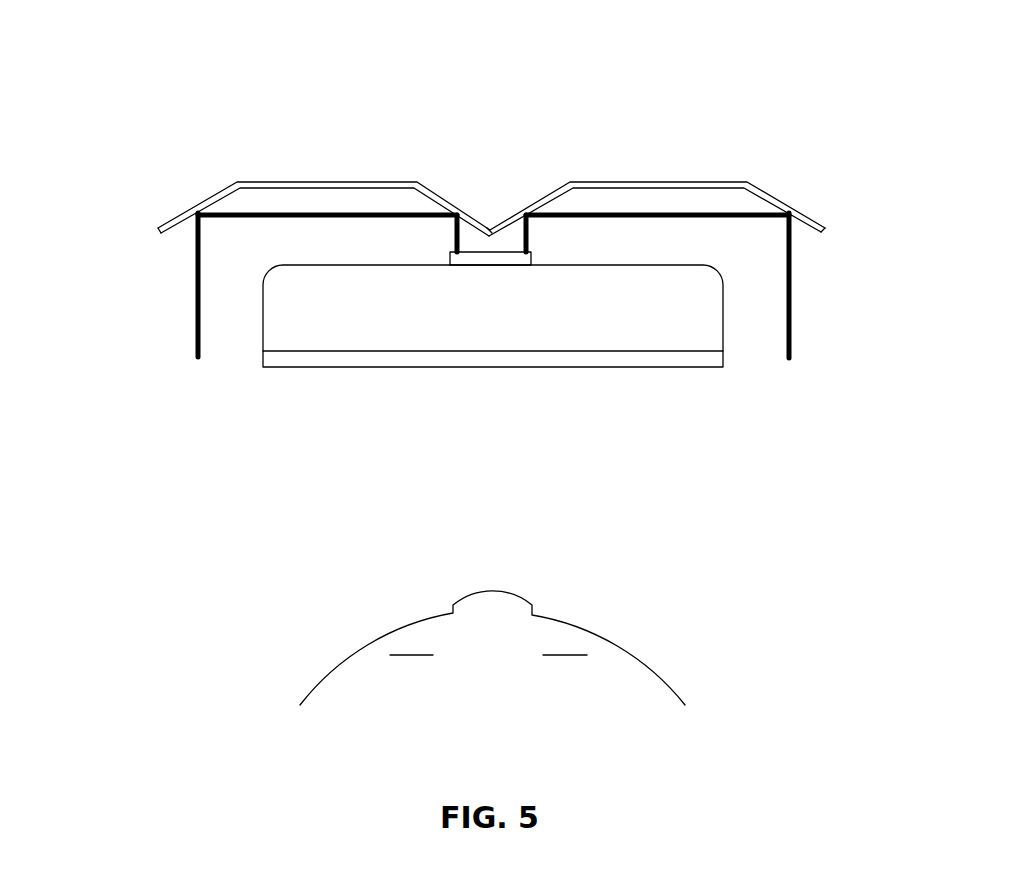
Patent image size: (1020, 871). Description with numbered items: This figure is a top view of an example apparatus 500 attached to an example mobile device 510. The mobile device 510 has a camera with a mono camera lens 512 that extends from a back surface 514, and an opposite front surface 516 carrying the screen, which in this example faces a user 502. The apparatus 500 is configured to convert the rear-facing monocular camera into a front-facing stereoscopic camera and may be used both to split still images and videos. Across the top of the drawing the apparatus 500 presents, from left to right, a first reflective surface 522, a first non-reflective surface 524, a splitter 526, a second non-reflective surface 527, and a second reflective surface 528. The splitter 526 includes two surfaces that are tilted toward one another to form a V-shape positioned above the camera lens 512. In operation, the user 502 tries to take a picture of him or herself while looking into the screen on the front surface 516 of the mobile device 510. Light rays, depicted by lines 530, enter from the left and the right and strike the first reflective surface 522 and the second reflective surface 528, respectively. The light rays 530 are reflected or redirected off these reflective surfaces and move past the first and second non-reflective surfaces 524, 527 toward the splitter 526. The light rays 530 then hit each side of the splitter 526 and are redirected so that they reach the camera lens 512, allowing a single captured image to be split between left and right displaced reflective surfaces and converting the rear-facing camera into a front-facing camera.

The apparatus 500 is at (372, 72).
The user 502 is at (352, 692).
The mobile device 510 is at (212, 392).
The mono camera lens 512 is at (493, 252).
The back surface 514 is at (683, 265).
The front surface 516 is at (620, 367).
The first reflective surface 522 is at (175, 212).
The first non-reflective surface 524 is at (315, 188).
The splitter 526 is at (498, 228).
The second non-reflective surface 527 is at (653, 190).
The second reflective surface 528 is at (822, 228).
The light rays 530 is at (198, 317).